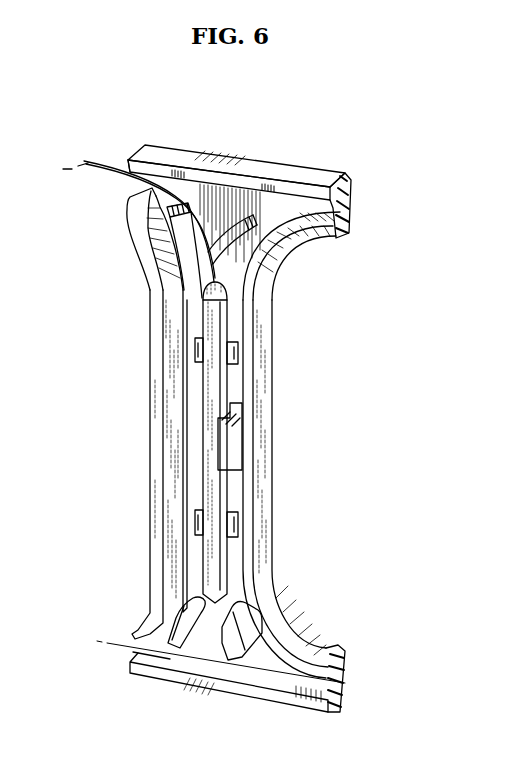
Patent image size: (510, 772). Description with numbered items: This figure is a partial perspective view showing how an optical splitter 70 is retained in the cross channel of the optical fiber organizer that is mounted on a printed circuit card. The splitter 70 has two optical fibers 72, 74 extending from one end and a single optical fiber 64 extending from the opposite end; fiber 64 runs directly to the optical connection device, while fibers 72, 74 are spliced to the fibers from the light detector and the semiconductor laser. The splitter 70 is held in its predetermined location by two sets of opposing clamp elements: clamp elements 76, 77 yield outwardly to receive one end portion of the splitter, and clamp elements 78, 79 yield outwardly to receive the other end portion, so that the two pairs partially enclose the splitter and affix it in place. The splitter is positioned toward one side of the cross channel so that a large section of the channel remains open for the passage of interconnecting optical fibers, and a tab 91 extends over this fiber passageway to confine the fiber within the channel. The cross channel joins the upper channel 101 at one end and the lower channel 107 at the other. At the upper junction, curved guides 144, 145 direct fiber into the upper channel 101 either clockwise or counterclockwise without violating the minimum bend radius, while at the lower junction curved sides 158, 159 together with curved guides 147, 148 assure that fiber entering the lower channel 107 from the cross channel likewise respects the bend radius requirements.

The optical fiber 64 is at (108, 645).
The optical splitter 70 is at (230, 321).
The optical fiber 72 is at (86, 162).
The optical fiber 74 is at (64, 168).
The clamp element 76 is at (240, 529).
The clamp element 77 is at (195, 521).
The clamp element 78 is at (240, 356).
The clamp element 79 is at (195, 347).
The tab 91 is at (245, 440).
The upper channel 101 is at (343, 678).
The lower channel 107 is at (346, 209).
The curved guide 144 is at (173, 643).
The curved guide 145 is at (228, 645).
The curved guide 147 is at (250, 208).
The curved guide 148 is at (166, 262).
The curved side 158 is at (277, 258).
The curved side 159 is at (150, 236).